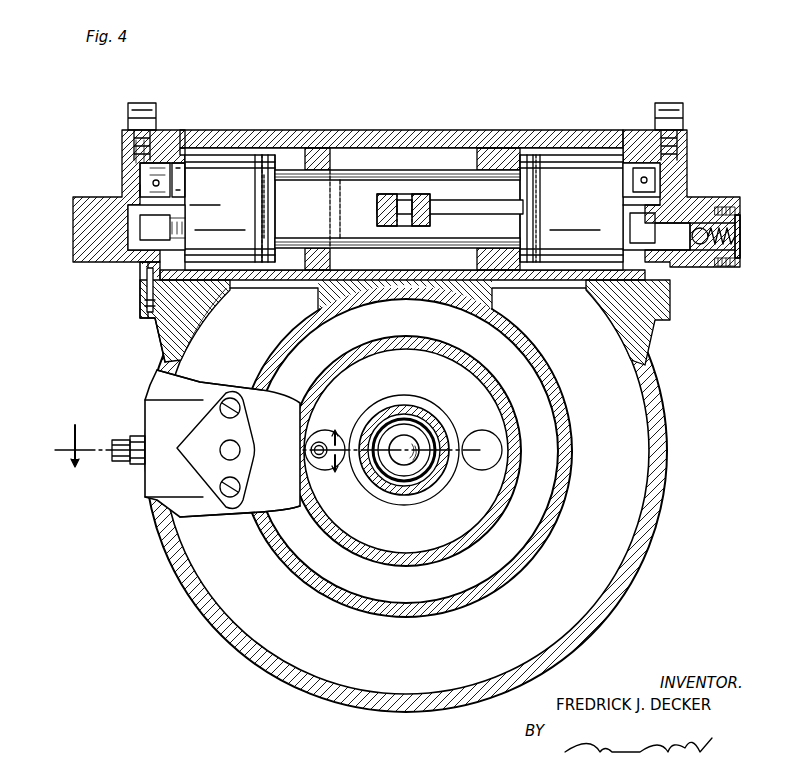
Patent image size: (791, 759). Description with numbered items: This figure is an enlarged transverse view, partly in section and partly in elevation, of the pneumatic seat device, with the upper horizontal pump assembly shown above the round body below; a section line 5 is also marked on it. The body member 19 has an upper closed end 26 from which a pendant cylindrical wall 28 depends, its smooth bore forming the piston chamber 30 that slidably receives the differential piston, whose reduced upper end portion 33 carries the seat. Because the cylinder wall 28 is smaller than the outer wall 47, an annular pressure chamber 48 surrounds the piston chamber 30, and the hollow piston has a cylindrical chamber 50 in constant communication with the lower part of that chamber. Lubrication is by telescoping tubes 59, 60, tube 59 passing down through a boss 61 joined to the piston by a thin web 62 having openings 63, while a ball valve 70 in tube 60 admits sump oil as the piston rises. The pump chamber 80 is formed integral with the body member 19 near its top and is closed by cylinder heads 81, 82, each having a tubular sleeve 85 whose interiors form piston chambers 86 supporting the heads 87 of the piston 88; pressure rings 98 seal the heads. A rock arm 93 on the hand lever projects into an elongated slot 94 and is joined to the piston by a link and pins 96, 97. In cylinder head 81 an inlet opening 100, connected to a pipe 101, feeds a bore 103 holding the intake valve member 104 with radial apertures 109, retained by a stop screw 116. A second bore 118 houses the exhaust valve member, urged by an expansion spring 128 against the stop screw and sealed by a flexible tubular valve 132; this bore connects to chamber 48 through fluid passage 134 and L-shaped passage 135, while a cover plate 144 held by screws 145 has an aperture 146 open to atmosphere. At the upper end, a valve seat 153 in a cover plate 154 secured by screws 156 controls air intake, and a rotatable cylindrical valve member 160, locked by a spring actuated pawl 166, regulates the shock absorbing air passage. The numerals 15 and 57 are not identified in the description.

The section line 5- 5 is at (206, 463).
The mounting bracket 15 is at (184, 534).
The body member 19 is at (652, 384).
The upper closed end 26 is at (170, 381).
The cylindrical wall 28 is at (563, 441).
The piston chamber 30 is at (309, 356).
The upper end portion of piston 33 is at (322, 516).
The outer wall 47 is at (636, 378).
The annular pressure chamber 48 is at (594, 487).
The cylindrical chamber 50 is at (396, 382).
The pin 57 is at (321, 442).
The telescoping tube 59 is at (434, 416).
The telescoping tube 60 is at (445, 428).
The boss 61 is at (415, 500).
The web 62 is at (465, 512).
The openings 63 is at (340, 430).
The ball valve 70 is at (397, 458).
The pump chamber 80 is at (444, 150).
The cylinder head 81 is at (664, 277).
The cylinder head 82 is at (110, 263).
The tubular sleeve 85 is at (254, 147).
The piston chambers 86 is at (205, 193).
The heads of piston 87 is at (279, 162).
The piston 88 is at (338, 186).
The rock arm 93 is at (378, 220).
The elongated slot 94 is at (368, 222).
The pin 96 is at (400, 226).
The pin 97 is at (493, 224).
The pressure rings 98 is at (262, 266).
The inlet opening 100 is at (136, 160).
The pipe 101 is at (130, 110).
The bore 103 is at (139, 188).
The intake valve member 104 is at (140, 180).
The radial apertures 109 is at (148, 170).
The stop screw 116 is at (182, 212).
The second bore 118 is at (140, 282).
The expansion spring 128 is at (138, 226).
The flexible tubular valve 132 is at (140, 244).
The fluid passage 134 is at (181, 300).
The L-shaped fluid passage 135 is at (148, 306).
The cover plate 144 is at (718, 249).
The screws 145 is at (722, 211).
The aperture 146 is at (732, 234).
The valve seat 153 is at (225, 451).
The cover plate 154 is at (205, 420).
The screws 156 is at (196, 490).
The cylindrical valve member 160 is at (120, 438).
The pawl 166 is at (128, 446).